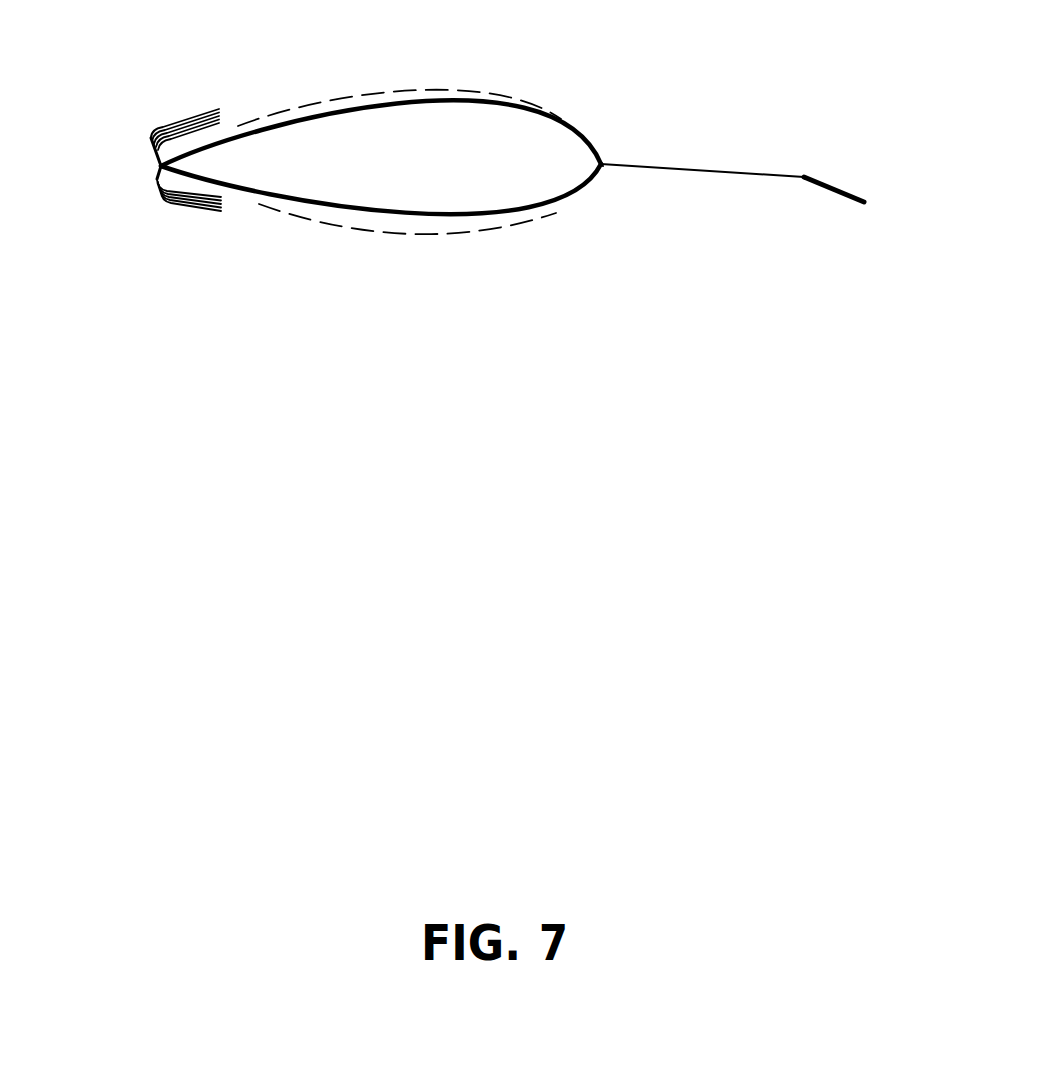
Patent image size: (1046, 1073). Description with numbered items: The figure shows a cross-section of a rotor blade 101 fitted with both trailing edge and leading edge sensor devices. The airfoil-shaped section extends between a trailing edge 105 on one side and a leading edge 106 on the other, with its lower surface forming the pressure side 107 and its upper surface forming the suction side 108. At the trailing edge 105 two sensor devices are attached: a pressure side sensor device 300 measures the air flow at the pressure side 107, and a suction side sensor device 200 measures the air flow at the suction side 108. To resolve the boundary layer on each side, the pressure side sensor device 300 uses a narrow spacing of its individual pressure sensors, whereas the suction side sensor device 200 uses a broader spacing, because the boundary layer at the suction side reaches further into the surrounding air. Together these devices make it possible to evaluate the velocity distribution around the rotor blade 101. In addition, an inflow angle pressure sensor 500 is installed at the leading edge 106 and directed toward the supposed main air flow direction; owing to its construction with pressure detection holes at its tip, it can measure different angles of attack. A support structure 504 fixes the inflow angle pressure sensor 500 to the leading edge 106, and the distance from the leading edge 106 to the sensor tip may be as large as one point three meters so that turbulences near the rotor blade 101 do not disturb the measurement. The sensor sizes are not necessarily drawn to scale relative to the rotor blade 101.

The rotor blade 101 is at (462, 181).
The trailing edge 105 is at (157, 167).
The leading edge 106 is at (600, 163).
The pressure side 107 is at (453, 233).
The suction side 108 is at (452, 87).
The suction side sensor device 200 is at (240, 87).
The pressure side sensor device 300 is at (210, 217).
The inflow angle pressure sensor 500 is at (837, 187).
The support structure 504 is at (735, 170).